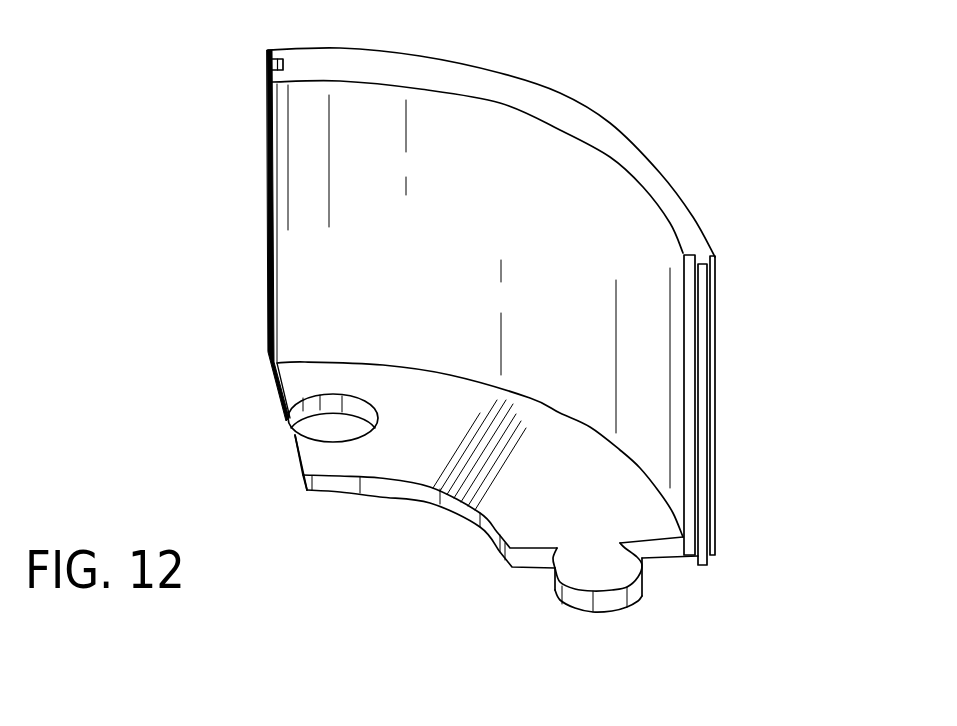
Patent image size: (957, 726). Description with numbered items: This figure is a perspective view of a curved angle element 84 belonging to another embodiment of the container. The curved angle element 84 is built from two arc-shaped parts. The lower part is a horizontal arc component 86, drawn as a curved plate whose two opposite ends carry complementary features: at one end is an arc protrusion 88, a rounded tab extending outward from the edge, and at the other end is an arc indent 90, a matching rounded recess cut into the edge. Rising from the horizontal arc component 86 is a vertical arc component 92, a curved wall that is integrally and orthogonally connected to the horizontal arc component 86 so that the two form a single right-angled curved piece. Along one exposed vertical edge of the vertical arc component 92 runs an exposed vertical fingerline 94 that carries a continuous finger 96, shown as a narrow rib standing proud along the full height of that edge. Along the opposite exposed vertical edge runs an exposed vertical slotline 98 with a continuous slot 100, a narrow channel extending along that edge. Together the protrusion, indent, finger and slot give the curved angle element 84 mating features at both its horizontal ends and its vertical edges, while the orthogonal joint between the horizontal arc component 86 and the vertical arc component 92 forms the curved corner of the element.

The curved angle element 84 is at (668, 109).
The horizontal arc component 86 is at (405, 462).
The arc protrusion 88 is at (583, 575).
The arc indent 90 is at (289, 421).
The vertical arc component 92 is at (535, 155).
The exposed vertical fingerline 94 is at (724, 347).
The continuous finger 96 is at (703, 458).
The exposed vertical slotline 98 is at (260, 83).
The continuous slot 100 is at (266, 224).